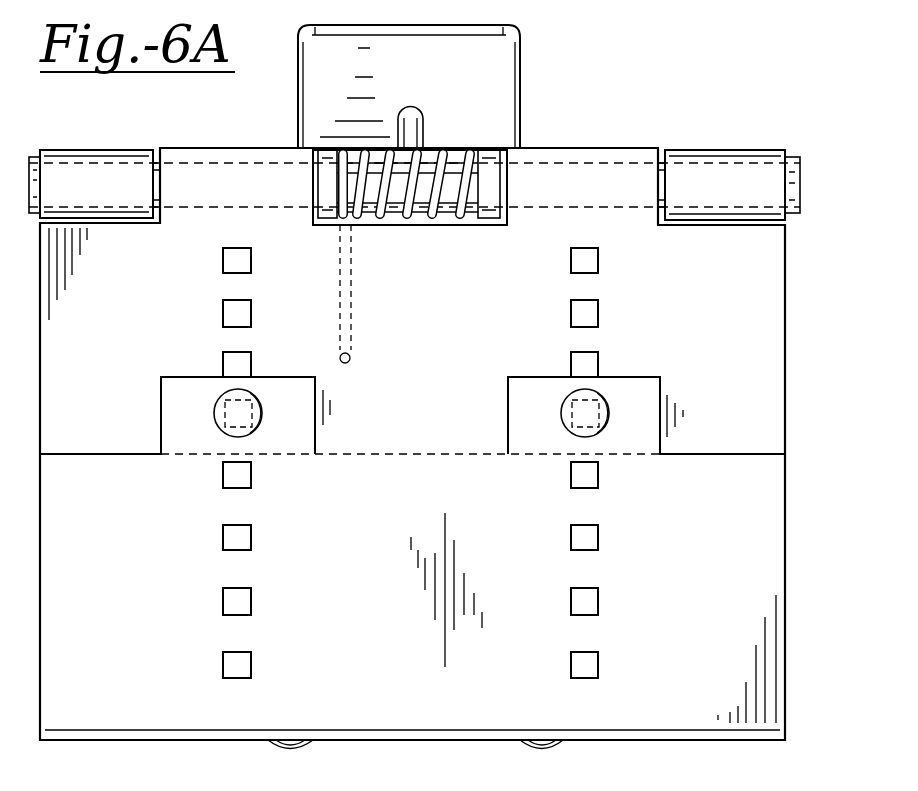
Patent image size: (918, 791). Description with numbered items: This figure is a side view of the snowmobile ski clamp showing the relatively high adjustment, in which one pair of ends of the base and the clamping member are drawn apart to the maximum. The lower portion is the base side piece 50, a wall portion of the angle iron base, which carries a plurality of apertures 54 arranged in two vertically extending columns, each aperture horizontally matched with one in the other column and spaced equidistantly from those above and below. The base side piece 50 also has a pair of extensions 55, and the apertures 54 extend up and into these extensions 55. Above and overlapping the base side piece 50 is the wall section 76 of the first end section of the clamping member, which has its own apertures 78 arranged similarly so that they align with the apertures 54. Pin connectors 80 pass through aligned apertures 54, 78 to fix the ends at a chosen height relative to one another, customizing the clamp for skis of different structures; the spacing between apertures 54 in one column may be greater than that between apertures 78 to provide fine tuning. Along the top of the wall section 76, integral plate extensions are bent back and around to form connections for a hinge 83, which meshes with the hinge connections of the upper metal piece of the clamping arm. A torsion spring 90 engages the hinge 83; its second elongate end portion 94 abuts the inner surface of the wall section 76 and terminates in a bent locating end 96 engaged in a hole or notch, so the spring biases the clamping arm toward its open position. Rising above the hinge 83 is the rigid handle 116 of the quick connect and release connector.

The base side piece 50 is at (496, 523).
The apertures 54 is at (252, 595).
The extensions 55 is at (659, 377).
The wall section 76 is at (483, 279).
The apertures 78 is at (223, 316).
The pin connectors 80 is at (252, 398).
The hinge 83 is at (800, 160).
The torsion spring 90 is at (437, 150).
The second elongate end portion 94 is at (353, 300).
The bent locating end 96 is at (350, 363).
The handle 116 is at (523, 107).